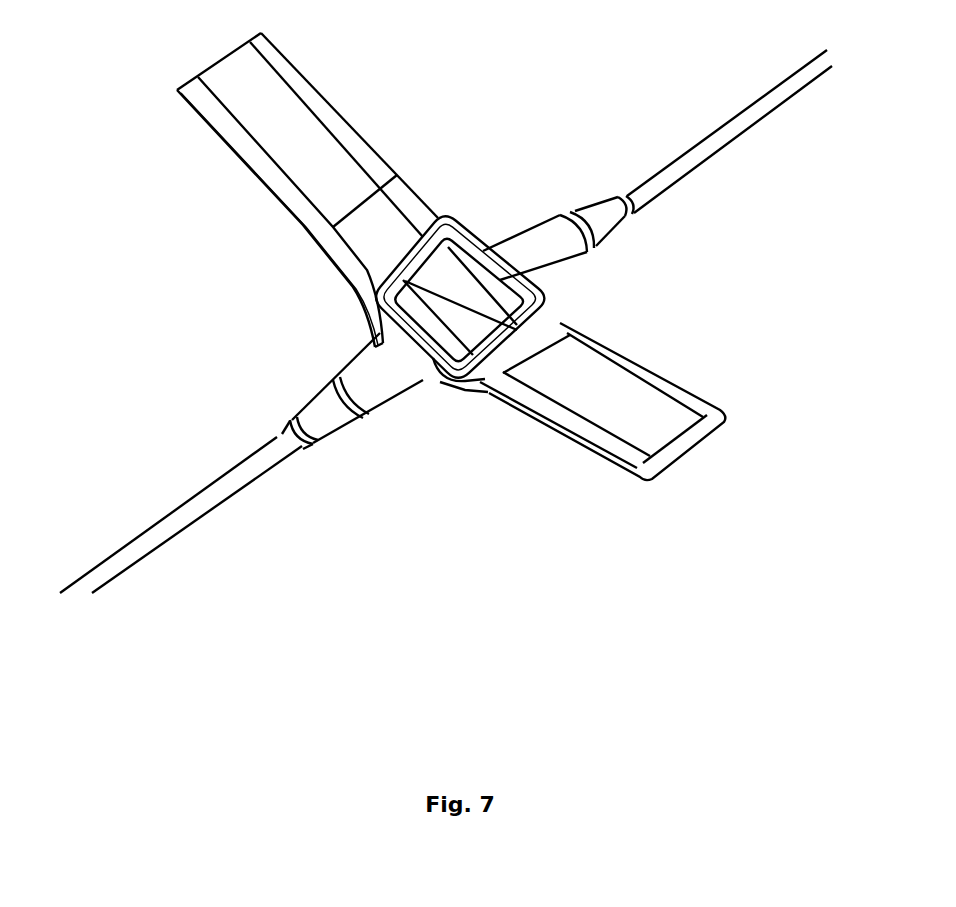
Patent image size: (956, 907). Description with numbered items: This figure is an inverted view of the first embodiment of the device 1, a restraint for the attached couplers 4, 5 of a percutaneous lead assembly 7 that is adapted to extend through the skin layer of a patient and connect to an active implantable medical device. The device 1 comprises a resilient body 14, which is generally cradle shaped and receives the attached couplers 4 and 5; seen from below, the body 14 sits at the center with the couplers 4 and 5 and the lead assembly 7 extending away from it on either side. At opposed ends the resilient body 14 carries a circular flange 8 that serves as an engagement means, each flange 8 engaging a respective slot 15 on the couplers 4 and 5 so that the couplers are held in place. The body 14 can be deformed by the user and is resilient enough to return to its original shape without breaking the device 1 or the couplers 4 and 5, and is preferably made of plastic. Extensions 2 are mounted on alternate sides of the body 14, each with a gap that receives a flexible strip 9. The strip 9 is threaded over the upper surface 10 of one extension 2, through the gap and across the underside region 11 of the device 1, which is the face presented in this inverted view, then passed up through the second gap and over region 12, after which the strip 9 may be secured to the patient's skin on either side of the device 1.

The device 1 is at (438, 390).
The extensions 2 is at (413, 243).
The coupler 4 is at (550, 260).
The coupler 5 is at (375, 380).
The percutaneous lead assembly 7 is at (640, 196).
The circular flange 8 is at (377, 330).
The flexible strip 9 is at (650, 413).
The upper surface 10 is at (487, 393).
The underside region 11 is at (473, 273).
The region 12 is at (363, 307).
The resilient body 14 is at (449, 387).
The slot 15 is at (410, 345).